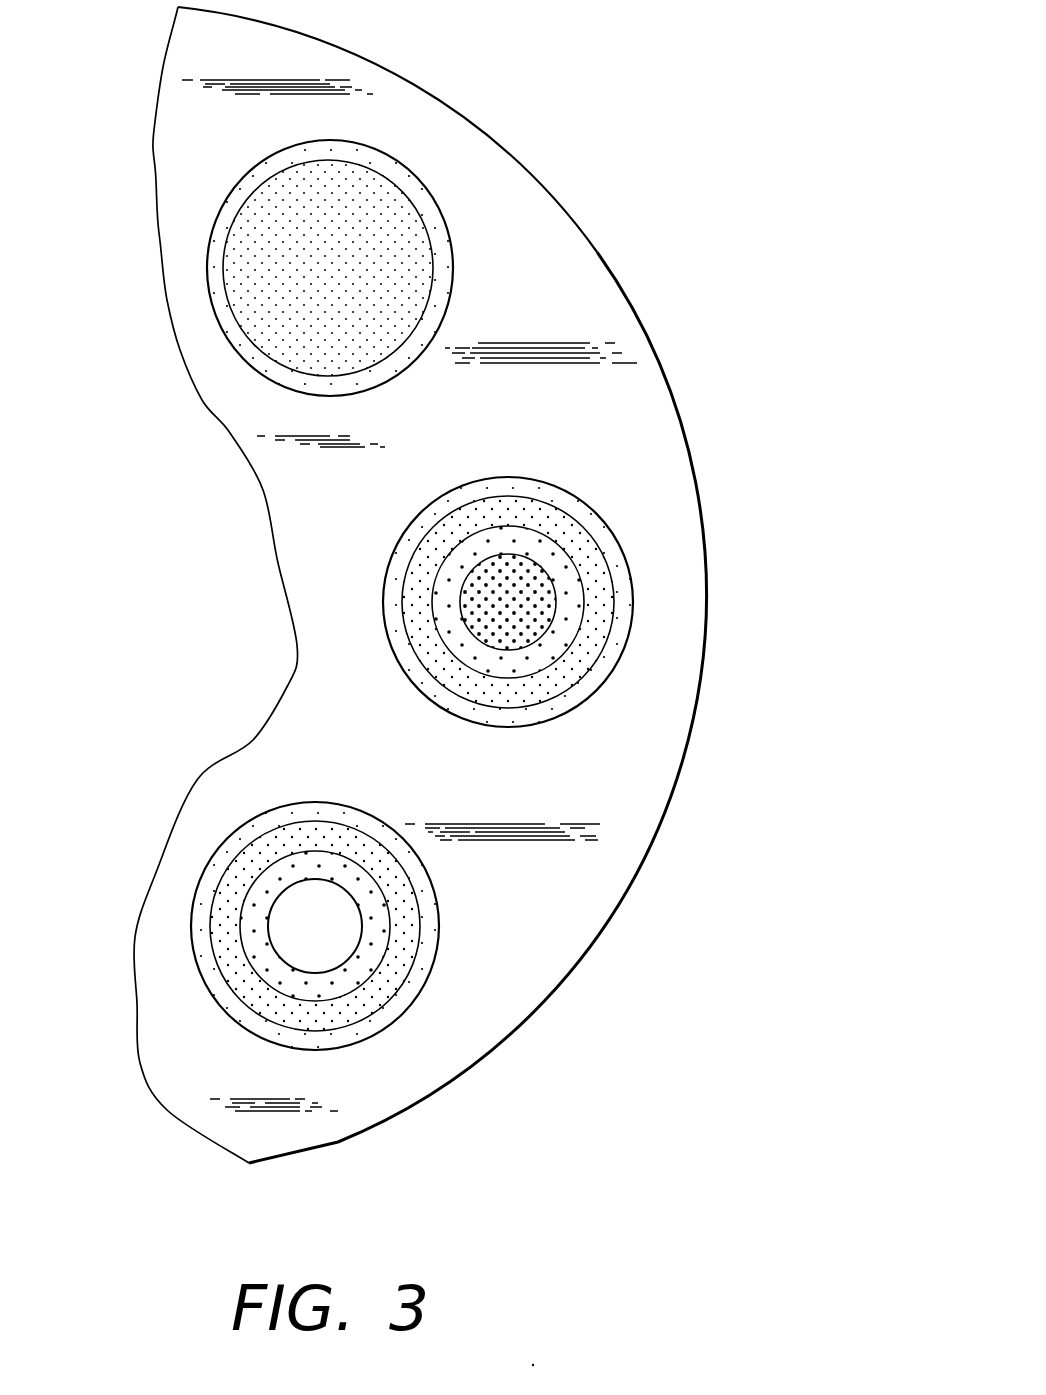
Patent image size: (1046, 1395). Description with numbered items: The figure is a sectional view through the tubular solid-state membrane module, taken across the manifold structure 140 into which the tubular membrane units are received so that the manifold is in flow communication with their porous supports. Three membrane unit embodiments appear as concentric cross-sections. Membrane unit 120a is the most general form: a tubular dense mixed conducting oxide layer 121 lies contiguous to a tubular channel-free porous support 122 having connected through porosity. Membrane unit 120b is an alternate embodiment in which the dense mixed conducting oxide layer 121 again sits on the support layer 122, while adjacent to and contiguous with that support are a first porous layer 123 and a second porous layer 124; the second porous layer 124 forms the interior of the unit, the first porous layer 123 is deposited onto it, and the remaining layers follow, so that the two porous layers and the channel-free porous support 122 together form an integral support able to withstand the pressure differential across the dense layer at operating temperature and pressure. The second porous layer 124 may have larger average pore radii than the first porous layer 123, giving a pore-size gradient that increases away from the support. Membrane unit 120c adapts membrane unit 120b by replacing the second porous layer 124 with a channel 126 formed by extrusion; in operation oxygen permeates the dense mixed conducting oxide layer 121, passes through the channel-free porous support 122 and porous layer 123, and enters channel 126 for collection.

The membrane unit 120a is at (388, 114).
The membrane unit 120b is at (645, 523).
The membrane unit 120c is at (170, 885).
The dense mixed conducting oxide layer 121 is at (415, 188).
The channel-free porous support 122 is at (395, 243).
The first porous layer 123 is at (543, 645).
The second porous layer 124 is at (505, 620).
The channel 126 is at (303, 920).
The manifold structure 140 is at (302, 727).